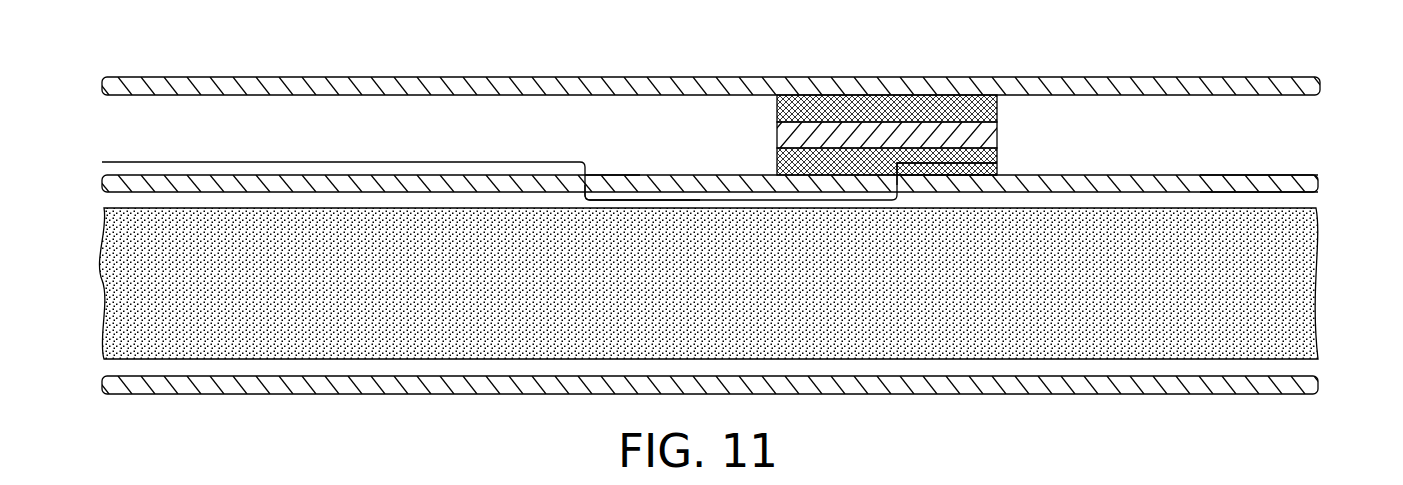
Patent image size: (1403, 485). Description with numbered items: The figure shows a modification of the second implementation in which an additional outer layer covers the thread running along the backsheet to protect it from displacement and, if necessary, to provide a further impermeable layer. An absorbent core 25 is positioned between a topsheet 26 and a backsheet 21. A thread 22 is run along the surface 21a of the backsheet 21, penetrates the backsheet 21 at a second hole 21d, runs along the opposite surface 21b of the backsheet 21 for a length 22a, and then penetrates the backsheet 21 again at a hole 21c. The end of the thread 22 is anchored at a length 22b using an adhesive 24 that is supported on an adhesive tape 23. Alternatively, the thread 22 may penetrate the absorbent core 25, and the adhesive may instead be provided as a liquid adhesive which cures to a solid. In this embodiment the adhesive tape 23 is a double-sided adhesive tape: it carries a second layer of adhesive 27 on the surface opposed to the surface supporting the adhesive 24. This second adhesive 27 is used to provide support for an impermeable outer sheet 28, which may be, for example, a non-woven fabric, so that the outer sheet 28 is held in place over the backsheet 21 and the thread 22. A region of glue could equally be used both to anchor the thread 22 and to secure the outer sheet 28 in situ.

The backsheet 21 is at (150, 175).
The surface of backsheet 21a is at (1275, 175).
The surface of backsheet 21b is at (1298, 194).
The hole 21c is at (920, 175).
The second hole 21d is at (595, 175).
The thread 22 is at (230, 161).
The length of thread 22a is at (658, 193).
The length of thread 22b is at (997, 155).
The adhesive tape 23 is at (777, 138).
The adhesive 24 is at (777, 166).
The absorbent core 25 is at (1315, 320).
The topsheet 26 is at (1020, 395).
The second layer of adhesive 27 is at (975, 98).
The impermeable outer sheet 28 is at (1156, 80).